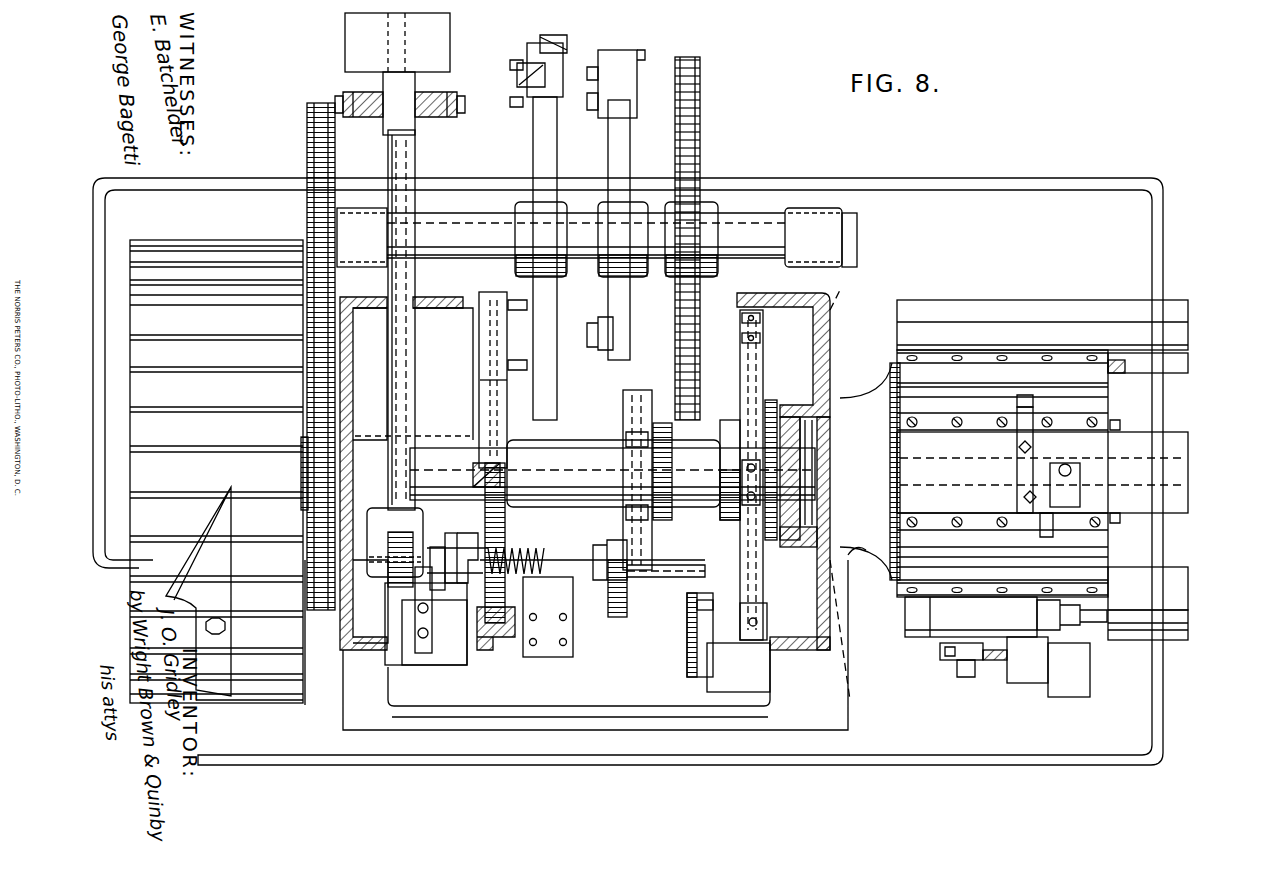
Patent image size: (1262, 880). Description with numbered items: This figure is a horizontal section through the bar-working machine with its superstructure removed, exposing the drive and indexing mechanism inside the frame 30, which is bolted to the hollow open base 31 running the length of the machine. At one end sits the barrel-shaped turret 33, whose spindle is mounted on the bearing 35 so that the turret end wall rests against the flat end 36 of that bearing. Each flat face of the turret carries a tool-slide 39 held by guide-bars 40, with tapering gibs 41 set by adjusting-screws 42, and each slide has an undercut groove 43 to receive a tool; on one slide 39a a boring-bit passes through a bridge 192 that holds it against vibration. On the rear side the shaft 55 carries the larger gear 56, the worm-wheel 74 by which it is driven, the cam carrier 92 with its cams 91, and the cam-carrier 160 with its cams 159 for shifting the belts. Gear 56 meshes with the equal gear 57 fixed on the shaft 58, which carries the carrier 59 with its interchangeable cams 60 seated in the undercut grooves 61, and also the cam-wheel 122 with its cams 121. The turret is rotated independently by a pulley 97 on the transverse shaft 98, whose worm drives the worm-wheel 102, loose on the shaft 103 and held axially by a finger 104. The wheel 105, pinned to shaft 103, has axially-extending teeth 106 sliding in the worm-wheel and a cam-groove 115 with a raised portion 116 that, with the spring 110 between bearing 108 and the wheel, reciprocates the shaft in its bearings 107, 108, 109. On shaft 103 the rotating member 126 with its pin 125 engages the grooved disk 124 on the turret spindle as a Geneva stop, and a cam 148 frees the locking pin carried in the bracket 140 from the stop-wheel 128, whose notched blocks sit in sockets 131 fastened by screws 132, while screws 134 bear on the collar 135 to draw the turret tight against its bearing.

The frame 30 is at (832, 642).
The hollow open base 31 is at (502, 762).
The barrel-shaped turret 33 is at (897, 357).
The bearing 35 is at (865, 535).
The flat end of the bearing 36 is at (897, 578).
The tool-slide 39 is at (1173, 375).
The tool-slide 39a is at (1148, 630).
The guide-bar 40 is at (1065, 350).
The tapering gib 41 is at (1120, 425).
The adjusting-screw 42 is at (1115, 420).
The groove 43 is at (1062, 320).
The shaft 55 is at (450, 225).
The larger gear 56 is at (310, 170).
The gear 57 is at (342, 430).
The shaft 58 is at (425, 460).
The carrier 59 is at (275, 663).
The cam 60 is at (190, 570).
The groove 61 is at (132, 338).
The worm-wheel 74 is at (700, 140).
The cam 91 is at (640, 65).
The cam carrier 92 is at (618, 152).
The pulley 97 is at (365, 48).
The transverse shaft 98 is at (400, 150).
The worm-wheel 102 is at (395, 542).
The shaft 103 is at (657, 573).
The finger 104 is at (410, 597).
The wheel 105 is at (506, 528).
The axially-extending teeth 106 is at (428, 580).
The bearing 107 is at (340, 600).
The bearing 108 is at (557, 592).
The bearing 109 is at (720, 603).
The spring 110 is at (528, 562).
The cam-groove 115 is at (456, 548).
The raised portion of the cam 116 is at (445, 560).
The cam 121 is at (478, 302).
The carrier or cam-wheel 122 is at (490, 390).
The disk 124 is at (638, 393).
The pin 125 is at (647, 545).
The rotating member 126 is at (617, 617).
The stop-wheel 128 is at (755, 385).
The socket 131 is at (762, 327).
The screw 132 is at (742, 322).
The screw 134 is at (748, 405).
The collar 135 is at (770, 543).
The bracket 140 is at (738, 667).
The cam 148 is at (708, 593).
The cam 159 is at (560, 45).
The cam-carrier 160 is at (534, 137).
The bridge 192 is at (962, 660).